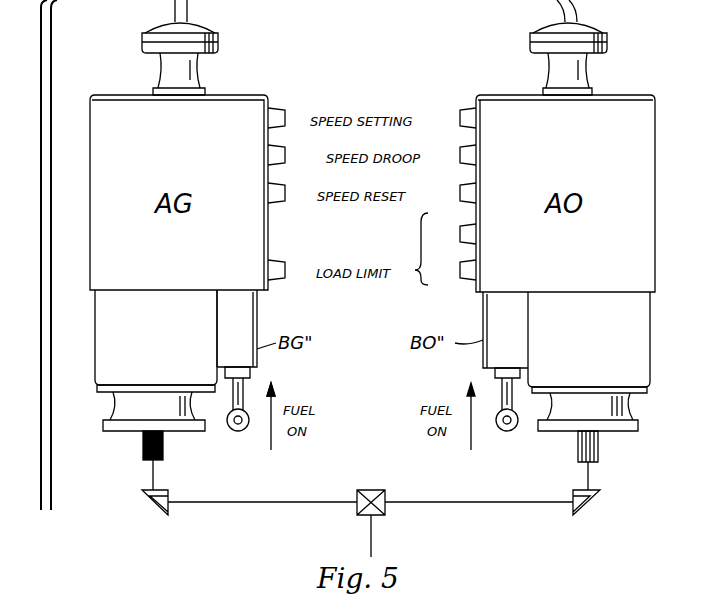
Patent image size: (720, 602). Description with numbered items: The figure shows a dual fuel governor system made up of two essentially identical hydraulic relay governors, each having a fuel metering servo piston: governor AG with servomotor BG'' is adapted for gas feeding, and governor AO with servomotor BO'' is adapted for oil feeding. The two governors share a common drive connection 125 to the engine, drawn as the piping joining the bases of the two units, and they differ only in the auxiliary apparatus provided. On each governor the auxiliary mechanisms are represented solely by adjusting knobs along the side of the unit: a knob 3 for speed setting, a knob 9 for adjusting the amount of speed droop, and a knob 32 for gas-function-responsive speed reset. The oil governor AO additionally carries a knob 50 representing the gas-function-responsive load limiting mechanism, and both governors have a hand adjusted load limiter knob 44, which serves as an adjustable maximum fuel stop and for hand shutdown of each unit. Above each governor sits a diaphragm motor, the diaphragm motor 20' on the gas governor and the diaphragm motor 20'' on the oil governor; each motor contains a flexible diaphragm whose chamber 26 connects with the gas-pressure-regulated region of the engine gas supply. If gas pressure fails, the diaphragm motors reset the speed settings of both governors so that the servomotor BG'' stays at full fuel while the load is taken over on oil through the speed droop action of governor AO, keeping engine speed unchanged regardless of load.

The chamber 26 is at (40, 343).
The diaphragm motor 20' is at (209, 28).
The diaphragm motor 20'' is at (601, 28).
The speed setting knob 3 is at (286, 109).
The speed droop knob 9 is at (296, 133).
The speed reset knob 32 is at (296, 173).
The load limiting knob 50 is at (456, 216).
The hand adjusted load limiter knob 44 is at (286, 261).
The common drive connection 125 is at (461, 503).